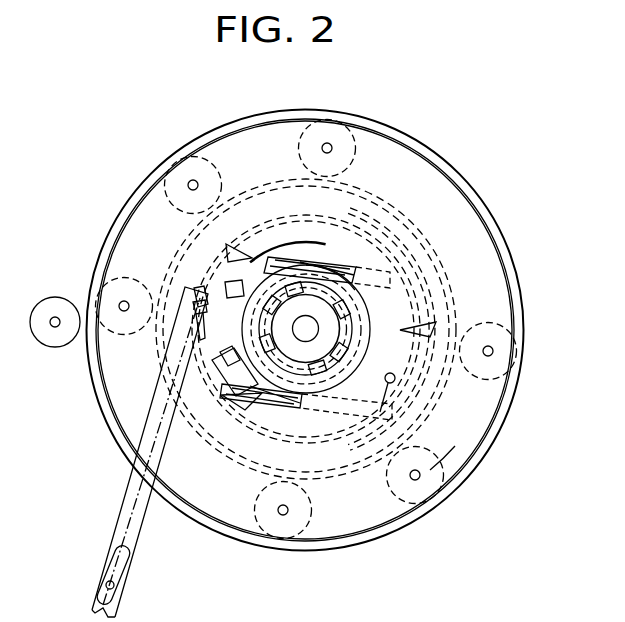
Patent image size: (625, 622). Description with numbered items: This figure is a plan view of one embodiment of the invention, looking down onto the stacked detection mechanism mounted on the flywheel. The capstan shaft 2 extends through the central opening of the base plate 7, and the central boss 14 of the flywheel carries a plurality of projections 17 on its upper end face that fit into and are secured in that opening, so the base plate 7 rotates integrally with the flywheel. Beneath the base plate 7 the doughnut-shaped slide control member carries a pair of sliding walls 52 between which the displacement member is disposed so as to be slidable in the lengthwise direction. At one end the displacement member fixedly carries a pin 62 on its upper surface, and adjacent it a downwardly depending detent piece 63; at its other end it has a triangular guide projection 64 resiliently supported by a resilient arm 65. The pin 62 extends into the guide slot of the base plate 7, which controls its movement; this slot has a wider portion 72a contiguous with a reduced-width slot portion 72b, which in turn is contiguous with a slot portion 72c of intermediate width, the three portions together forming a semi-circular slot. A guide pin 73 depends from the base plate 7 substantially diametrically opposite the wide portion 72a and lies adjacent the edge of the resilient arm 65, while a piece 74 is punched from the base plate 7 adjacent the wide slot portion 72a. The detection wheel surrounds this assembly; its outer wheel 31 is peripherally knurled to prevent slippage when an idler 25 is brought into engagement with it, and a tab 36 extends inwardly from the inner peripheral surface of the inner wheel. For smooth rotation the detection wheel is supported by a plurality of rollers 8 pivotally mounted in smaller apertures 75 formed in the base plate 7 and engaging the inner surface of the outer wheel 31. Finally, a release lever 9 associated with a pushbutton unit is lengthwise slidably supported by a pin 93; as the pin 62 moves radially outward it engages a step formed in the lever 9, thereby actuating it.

The outer wheel 31 is at (490, 212).
The rollers 8 is at (500, 346).
The smaller apertures 75 is at (413, 478).
The base plate 7 is at (470, 458).
The idler 25 is at (50, 344).
The resilient arm 65 is at (420, 386).
The triangular guide projection 64 is at (436, 324).
The detent piece 63 is at (196, 266).
The wider slot portion 72a is at (214, 262).
The reduced-width slot portion 72b is at (285, 250).
The intermediate-width slot portion 72c is at (324, 246).
The capstan shaft 2 is at (306, 328).
The central boss 14 is at (350, 340).
The projections 17 is at (346, 352).
The sliding walls 52 is at (372, 244).
The pin 62 is at (258, 256).
The punched piece 74 is at (213, 392).
The guide pin 73 is at (386, 392).
The tab 36 is at (195, 323).
The release lever 9 is at (120, 520).
The pin 93 is at (106, 586).